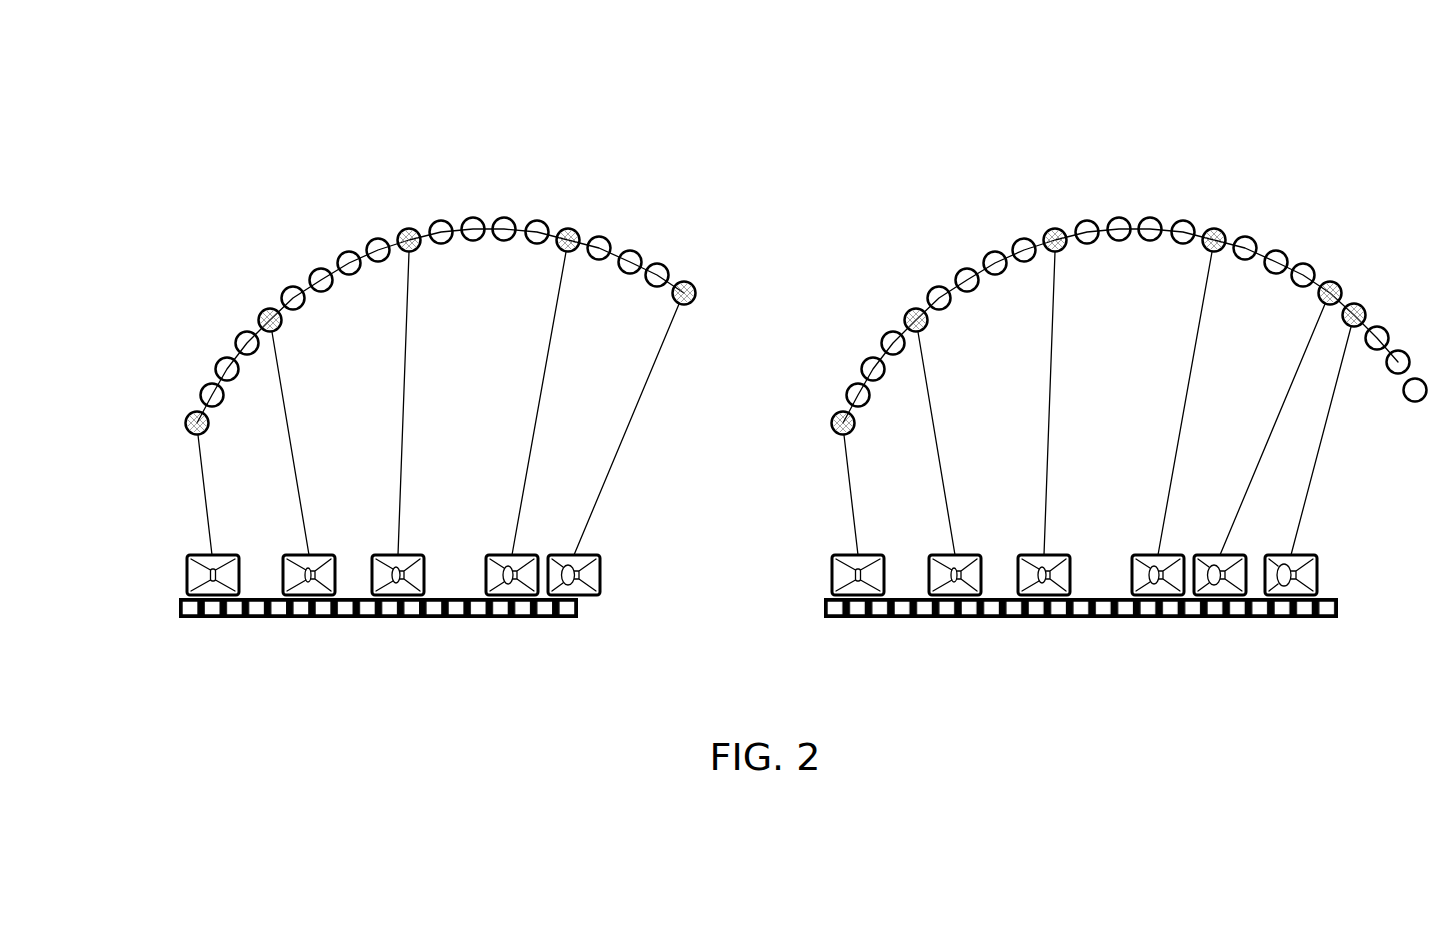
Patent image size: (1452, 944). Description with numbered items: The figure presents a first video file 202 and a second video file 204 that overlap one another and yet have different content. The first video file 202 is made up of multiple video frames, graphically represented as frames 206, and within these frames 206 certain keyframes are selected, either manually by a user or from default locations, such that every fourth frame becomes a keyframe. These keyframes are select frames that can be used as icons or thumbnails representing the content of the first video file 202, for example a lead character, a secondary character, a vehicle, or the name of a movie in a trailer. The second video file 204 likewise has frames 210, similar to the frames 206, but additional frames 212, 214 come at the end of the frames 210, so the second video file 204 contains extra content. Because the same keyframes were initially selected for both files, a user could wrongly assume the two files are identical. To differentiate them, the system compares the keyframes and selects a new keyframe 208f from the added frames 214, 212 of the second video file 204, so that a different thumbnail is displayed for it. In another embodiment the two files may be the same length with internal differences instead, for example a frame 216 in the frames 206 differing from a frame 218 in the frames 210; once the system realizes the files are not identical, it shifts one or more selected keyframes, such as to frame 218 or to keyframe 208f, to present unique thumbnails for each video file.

The first video file 202 is at (352, 637).
The second video file 204 is at (998, 637).
The frames 206 is at (490, 130).
The new keyframe 208f is at (1342, 314).
The frames 210 is at (1136, 130).
The additional frames 212 is at (1222, 621).
The additional frames 214 is at (1348, 298).
The frame 216 is at (319, 269).
The frame 218 is at (965, 269).